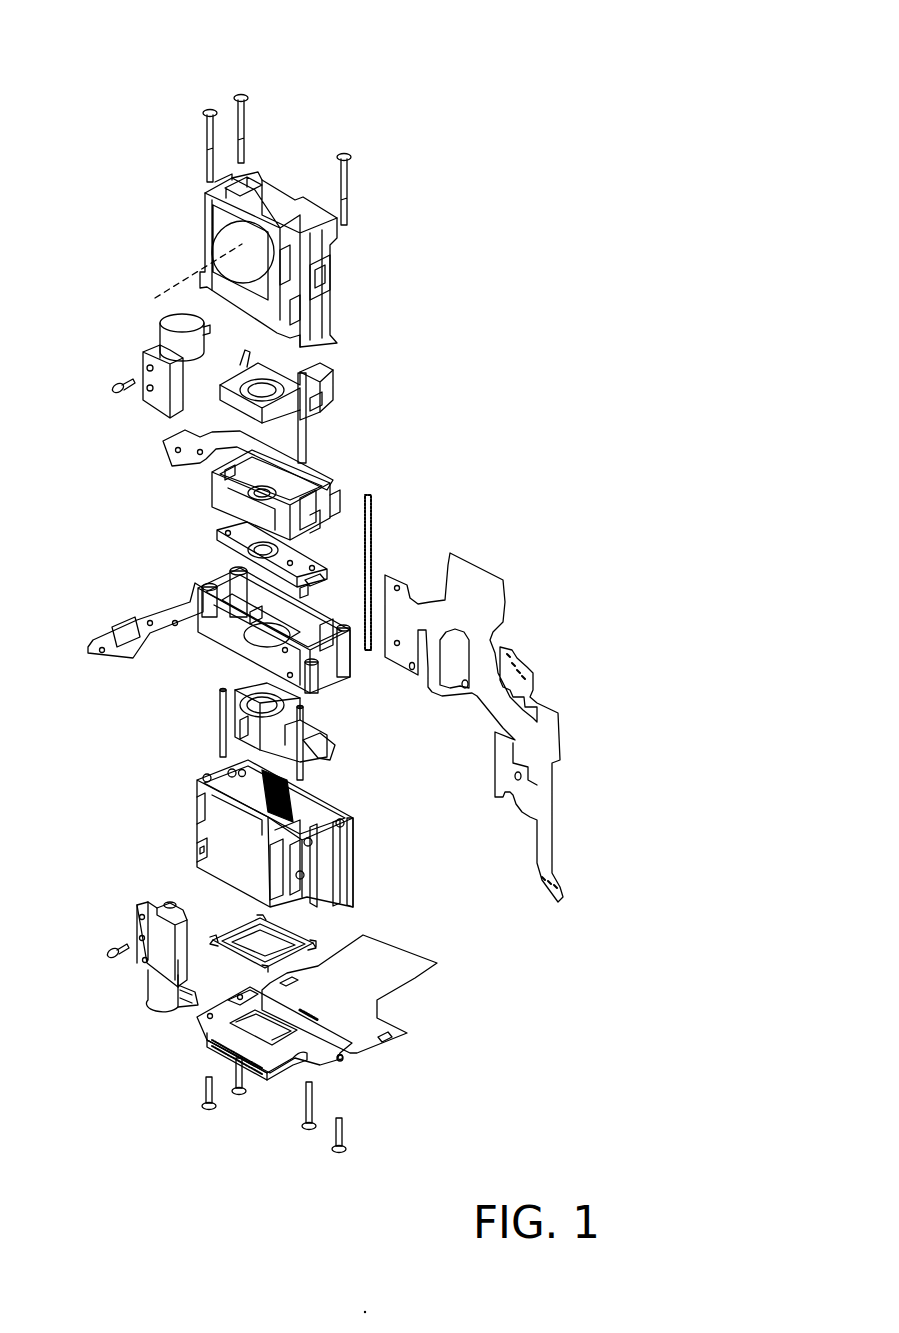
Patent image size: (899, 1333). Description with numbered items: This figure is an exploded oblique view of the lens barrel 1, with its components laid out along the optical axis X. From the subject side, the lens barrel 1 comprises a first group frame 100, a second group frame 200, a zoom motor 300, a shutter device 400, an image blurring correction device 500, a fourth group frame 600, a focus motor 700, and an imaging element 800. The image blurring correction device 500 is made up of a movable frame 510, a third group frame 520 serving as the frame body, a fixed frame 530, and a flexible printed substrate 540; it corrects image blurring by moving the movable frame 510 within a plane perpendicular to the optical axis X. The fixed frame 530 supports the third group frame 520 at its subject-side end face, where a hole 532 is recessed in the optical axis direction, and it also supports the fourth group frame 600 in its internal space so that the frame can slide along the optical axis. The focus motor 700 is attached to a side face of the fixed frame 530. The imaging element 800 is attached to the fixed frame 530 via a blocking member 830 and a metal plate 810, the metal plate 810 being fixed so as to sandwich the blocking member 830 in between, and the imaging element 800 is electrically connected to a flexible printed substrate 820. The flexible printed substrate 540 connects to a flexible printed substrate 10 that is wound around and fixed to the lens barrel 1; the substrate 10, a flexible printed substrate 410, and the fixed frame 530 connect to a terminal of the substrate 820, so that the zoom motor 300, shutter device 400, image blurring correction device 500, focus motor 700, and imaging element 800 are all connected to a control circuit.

The lens barrel 1 is at (78, 58).
The flexible printed substrate 10 is at (519, 568).
The first group frame 100 is at (354, 262).
The second group frame 200 is at (358, 404).
The zoom motor 300 is at (139, 318).
The shutter device 400 is at (360, 494).
The flexible printed substrate 410 is at (198, 451).
The image blurring correction device 500 is at (77, 767).
The movable frame 510 is at (190, 521).
The third group frame 520 is at (190, 658).
The fixed frame 530 is at (183, 770).
The hole 532 is at (240, 770).
The flexible printed substrate 540 is at (135, 625).
The fourth group frame 600 is at (349, 728).
The focus motor 700 is at (104, 920).
The imaging element 800 is at (225, 1048).
The metal plate 810 is at (176, 1028).
The flexible printed substrate 820 is at (375, 985).
The blocking member 830 is at (329, 930).